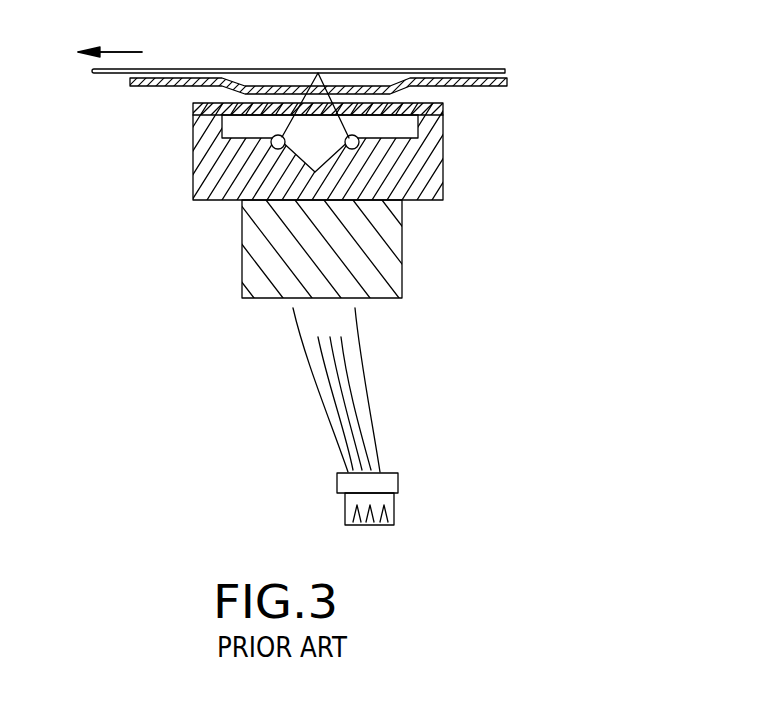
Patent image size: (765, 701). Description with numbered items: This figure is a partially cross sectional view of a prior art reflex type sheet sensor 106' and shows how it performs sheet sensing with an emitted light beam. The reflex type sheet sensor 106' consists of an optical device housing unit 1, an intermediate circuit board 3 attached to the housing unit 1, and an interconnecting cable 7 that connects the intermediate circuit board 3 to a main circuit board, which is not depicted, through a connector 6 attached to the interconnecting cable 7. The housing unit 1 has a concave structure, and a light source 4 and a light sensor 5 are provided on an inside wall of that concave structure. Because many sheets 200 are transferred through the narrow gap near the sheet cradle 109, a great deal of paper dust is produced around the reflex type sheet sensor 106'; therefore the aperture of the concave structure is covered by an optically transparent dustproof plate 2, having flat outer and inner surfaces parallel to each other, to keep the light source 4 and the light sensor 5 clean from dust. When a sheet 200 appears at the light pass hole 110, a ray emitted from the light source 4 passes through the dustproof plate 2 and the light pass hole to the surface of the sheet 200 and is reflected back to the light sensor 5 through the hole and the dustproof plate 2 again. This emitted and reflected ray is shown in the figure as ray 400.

The optical device housing unit 1 is at (193, 165).
The dustproof plate 2 is at (233, 107).
The intermediate circuit board 3 is at (402, 256).
The light source 4 is at (271, 147).
The light sensor 5 is at (357, 149).
The connector 6 is at (326, 498).
The interconnecting cable 7 is at (357, 377).
The sheet cradle 109 is at (156, 87).
The light pass hole 110 is at (283, 106).
The sheet 200 is at (403, 67).
The ray 400 is at (338, 126).
The reflex type sheet sensor 106' is at (370, 122).